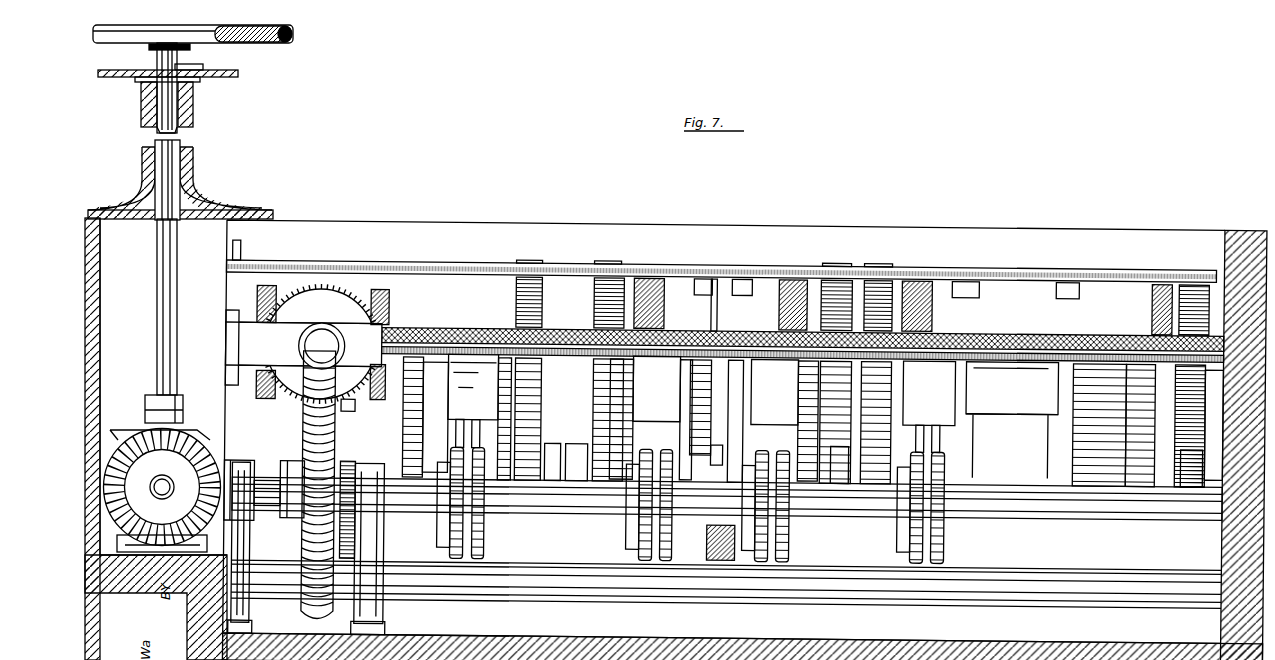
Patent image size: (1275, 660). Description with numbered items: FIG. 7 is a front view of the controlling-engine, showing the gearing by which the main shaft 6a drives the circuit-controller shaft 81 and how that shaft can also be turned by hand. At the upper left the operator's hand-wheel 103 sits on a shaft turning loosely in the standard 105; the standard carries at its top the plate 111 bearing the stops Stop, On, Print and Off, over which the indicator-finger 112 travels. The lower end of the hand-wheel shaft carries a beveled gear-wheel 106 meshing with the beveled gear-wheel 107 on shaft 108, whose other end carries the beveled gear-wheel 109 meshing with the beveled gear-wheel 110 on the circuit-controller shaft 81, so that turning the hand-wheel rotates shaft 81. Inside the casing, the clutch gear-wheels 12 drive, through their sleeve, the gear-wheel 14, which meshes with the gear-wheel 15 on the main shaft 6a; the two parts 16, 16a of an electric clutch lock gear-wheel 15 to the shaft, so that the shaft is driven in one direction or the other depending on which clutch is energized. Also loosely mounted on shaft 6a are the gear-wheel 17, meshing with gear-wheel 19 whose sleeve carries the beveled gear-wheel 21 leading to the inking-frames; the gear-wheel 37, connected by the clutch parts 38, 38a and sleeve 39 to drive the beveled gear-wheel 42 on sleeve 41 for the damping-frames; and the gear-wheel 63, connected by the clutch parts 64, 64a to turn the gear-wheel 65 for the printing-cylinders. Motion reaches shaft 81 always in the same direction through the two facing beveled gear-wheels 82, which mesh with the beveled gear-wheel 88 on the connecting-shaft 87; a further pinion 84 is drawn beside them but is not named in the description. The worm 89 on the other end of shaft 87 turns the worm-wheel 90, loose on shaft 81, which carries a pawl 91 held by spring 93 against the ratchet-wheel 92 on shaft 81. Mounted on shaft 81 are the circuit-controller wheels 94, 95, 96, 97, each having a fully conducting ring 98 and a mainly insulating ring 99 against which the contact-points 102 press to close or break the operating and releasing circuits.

The hand-wheel 103 is at (295, 40).
The plate 111 is at (126, 69).
The indicator-finger 112 is at (180, 66).
The standard 105 is at (195, 175).
The beveled gear-wheel 107 is at (158, 283).
The beveled gear-wheel 106 is at (126, 427).
The shaft 108 is at (167, 487).
The beveled gear-wheel 109 is at (163, 543).
The beveled gear-wheel 110 is at (224, 457).
The worm-wheel 90 is at (305, 424).
The beveled gear-wheel 88 is at (321, 344).
The connecting-shaft 87 is at (321, 346).
The worm 89 is at (303, 348).
The beveled gear-wheels 82 is at (276, 295).
The bevel pinion 84 is at (390, 300).
The pawl 91 is at (357, 414).
The ratchet-wheel 92 is at (350, 461).
The spring 93 is at (354, 492).
The gear-wheel 65 is at (537, 260).
The gear-wheel 14 is at (617, 262).
The clutch gear-wheels 12 is at (790, 272).
The gear-wheel 17 is at (880, 480).
The gear-wheel 19 is at (884, 262).
The beveled gear-wheel 21 is at (933, 310).
The beveled gear-wheel 42 is at (1160, 263).
The sleeve 41 is at (1185, 288).
The circuit-controller shaft 81 is at (1067, 503).
The electric clutch part 64 is at (492, 404).
The electric clutch part 64a is at (449, 417).
The contact-points 102 is at (928, 418).
The electric clutch part 16 is at (758, 418).
The electric clutch part 16a is at (628, 398).
The gear-wheel 15 is at (842, 463).
The gear-wheel 63 is at (528, 460).
The shaft 6a is at (1030, 455).
The electric clutch part 38 is at (1099, 425).
The electric clutch part 38a is at (1140, 425).
The sleeve 39 is at (1187, 426).
The gear-wheel 37 is at (1193, 480).
The ring 98 is at (946, 600).
The ring 99 is at (918, 600).
The circuit-controller wheel 94 is at (450, 518).
The circuit-controller wheel 95 is at (640, 535).
The circuit-controller wheel 96 is at (758, 548).
The circuit-controller wheel 97 is at (912, 552).